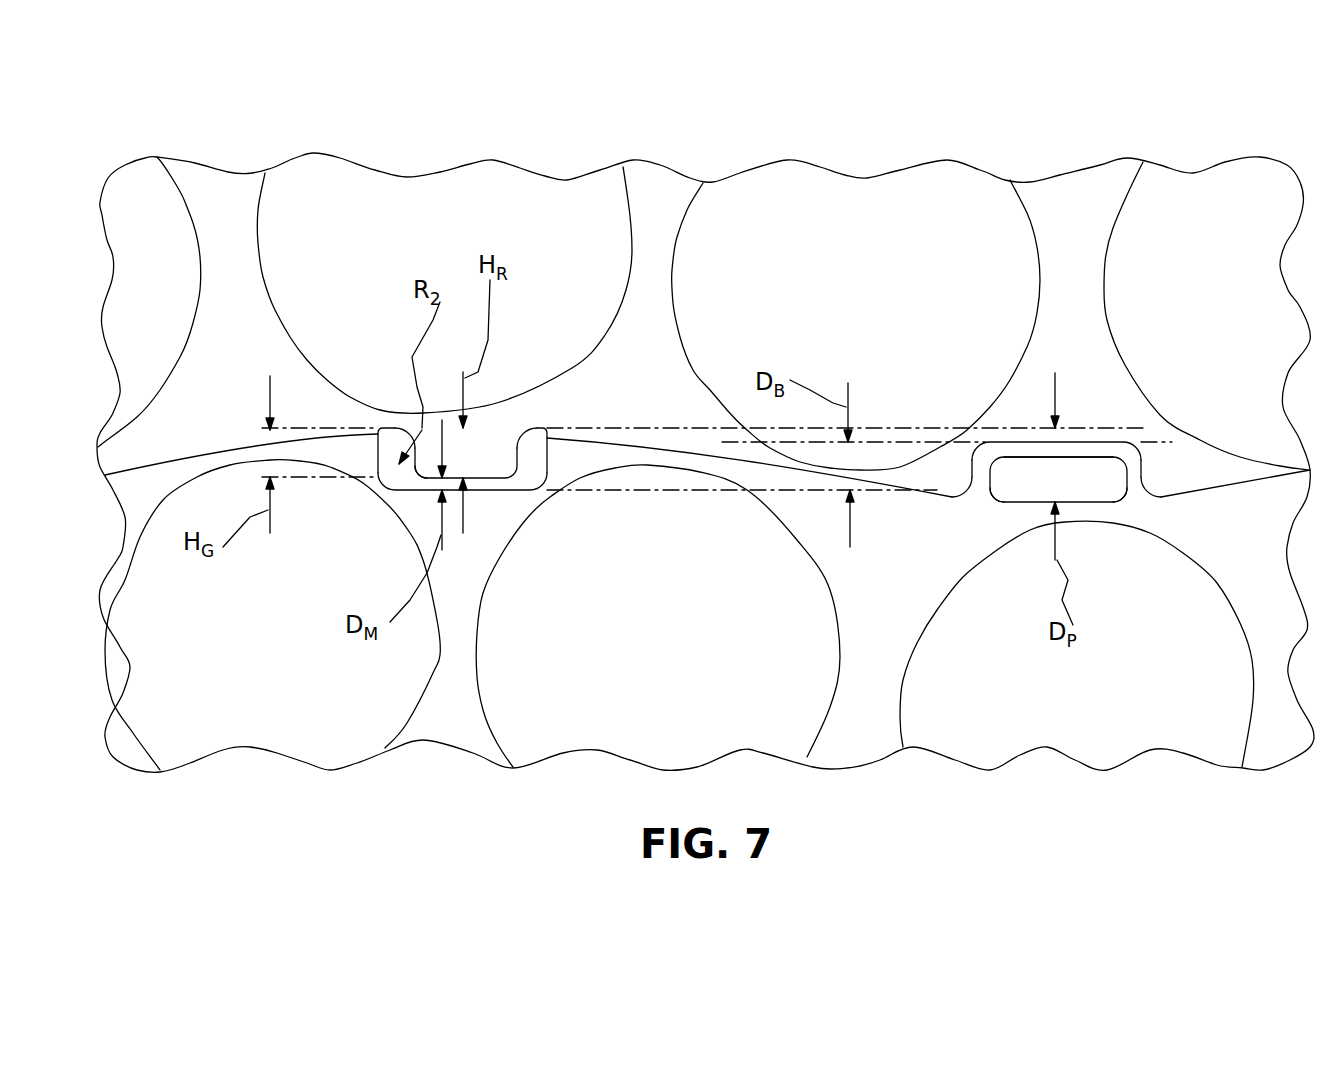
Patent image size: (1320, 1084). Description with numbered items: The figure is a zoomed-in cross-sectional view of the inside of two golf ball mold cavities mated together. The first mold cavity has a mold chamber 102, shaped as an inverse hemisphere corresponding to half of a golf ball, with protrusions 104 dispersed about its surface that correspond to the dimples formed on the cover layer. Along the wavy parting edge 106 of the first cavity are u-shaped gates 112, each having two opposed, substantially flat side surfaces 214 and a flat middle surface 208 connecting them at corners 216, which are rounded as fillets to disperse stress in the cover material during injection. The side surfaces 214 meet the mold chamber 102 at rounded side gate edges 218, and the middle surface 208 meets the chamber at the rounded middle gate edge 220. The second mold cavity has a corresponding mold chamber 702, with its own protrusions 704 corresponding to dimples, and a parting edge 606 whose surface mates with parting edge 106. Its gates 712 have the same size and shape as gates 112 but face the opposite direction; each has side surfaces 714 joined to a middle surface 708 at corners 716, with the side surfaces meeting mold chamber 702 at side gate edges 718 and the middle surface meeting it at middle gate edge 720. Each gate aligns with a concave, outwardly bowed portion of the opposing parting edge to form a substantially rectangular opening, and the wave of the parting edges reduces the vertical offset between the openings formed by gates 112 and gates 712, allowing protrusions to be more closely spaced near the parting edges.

The mold chamber 102 is at (705, 493).
The protrusions 104 is at (1077, 677).
The parting edge 106 is at (210, 511).
The gates 112 is at (393, 523).
The middle surface 208 is at (498, 519).
The side surfaces 214 is at (459, 384).
The corners 216 is at (477, 516).
The side gate edges 218 is at (678, 391).
The middle gate edge 220 is at (468, 559).
The parting edge 606 is at (122, 309).
The mold chamber 702 is at (1165, 290).
The cell 704 is at (856, 290).
The middle surface 708 is at (1035, 421).
The gates 712 is at (1074, 381).
The side surfaces 714 is at (1066, 553).
The corners 716 is at (1059, 425).
The side gate edges 718 is at (1074, 511).
The middle gate edge 720 is at (1044, 374).